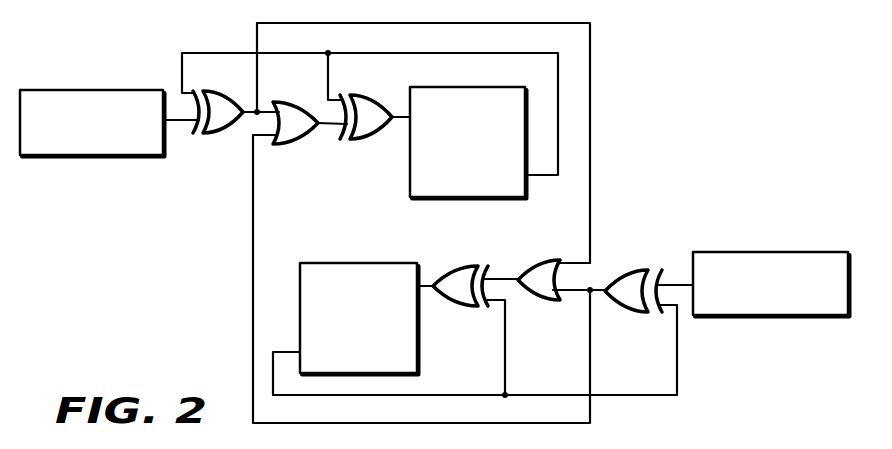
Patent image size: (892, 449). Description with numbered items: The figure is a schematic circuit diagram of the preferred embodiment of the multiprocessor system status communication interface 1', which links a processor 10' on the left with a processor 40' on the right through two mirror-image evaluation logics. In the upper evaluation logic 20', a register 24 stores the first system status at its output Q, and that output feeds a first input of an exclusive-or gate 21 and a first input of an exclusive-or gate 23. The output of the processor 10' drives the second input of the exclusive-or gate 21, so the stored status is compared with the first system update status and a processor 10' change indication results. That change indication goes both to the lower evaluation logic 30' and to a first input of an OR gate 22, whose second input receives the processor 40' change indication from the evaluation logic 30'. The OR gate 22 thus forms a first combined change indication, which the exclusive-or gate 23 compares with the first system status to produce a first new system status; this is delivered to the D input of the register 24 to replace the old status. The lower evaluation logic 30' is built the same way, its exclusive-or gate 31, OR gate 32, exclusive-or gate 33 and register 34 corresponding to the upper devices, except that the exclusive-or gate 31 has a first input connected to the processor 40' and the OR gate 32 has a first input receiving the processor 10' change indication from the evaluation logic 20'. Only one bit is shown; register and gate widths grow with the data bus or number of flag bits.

The multiprocessor system status communication interface 1' is at (473, 218).
The processor 10' is at (92, 108).
The evaluation logic 20' is at (348, 184).
The exclusive-or gate 21 is at (218, 90).
The OR gate 22 is at (287, 102).
The exclusive-or gate 23 is at (366, 94).
The register 24 is at (492, 72).
The evaluation logic 30' is at (470, 353).
The exclusive-or gate 31 is at (645, 272).
The OR gate 32 is at (548, 240).
The exclusive-or gate 33 is at (468, 267).
The register 34 is at (376, 263).
The processor 40' is at (771, 268).